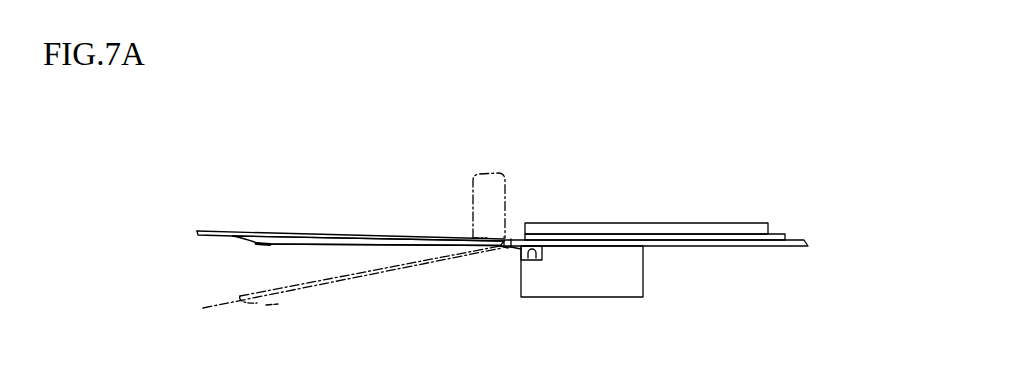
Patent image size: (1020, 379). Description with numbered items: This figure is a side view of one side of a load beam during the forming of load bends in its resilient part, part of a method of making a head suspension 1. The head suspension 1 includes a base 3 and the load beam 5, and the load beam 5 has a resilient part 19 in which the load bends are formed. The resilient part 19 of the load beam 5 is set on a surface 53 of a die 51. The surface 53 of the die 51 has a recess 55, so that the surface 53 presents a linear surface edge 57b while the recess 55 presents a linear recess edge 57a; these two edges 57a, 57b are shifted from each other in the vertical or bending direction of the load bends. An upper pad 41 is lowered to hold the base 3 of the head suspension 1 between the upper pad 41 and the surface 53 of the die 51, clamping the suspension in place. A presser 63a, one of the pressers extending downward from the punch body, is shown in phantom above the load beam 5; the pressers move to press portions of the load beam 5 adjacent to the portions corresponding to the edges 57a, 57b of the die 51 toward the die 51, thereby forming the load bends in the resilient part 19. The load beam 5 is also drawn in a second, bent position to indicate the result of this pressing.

The head suspension 1 is at (340, 228).
The load beam 5 is at (406, 236).
The presser 63a is at (473, 188).
The surface edge 57b is at (506, 243).
The surface 53 is at (598, 236).
The upper pad 41 is at (759, 222).
The base 3 is at (786, 235).
The resilient part 19 is at (507, 247).
The recess edge 57a is at (520, 253).
The recess 55 is at (533, 256).
The die 51 is at (644, 283).